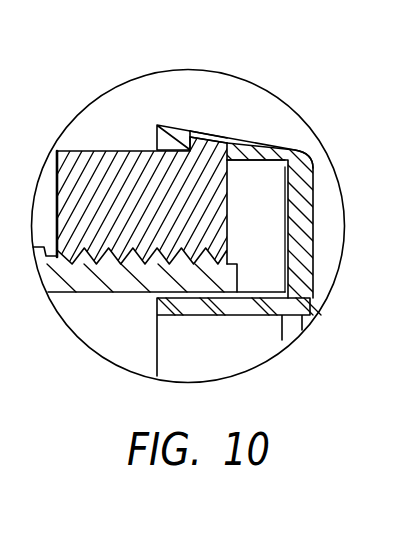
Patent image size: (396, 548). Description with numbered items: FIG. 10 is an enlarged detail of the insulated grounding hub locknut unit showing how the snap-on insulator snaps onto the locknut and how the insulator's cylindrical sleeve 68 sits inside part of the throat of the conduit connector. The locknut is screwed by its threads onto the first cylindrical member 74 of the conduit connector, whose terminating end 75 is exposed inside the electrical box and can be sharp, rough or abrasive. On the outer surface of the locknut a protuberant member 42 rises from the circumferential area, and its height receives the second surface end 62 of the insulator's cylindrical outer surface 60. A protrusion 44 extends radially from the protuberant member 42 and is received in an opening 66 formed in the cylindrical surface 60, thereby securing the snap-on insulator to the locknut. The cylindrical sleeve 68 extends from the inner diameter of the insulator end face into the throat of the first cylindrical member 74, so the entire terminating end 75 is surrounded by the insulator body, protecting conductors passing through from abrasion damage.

The protuberant member 42 is at (103, 151).
The protrusion 44 is at (229, 139).
The cylindrical outer surface 60 is at (293, 142).
The second surface end 62 is at (178, 125).
The opening 66 is at (231, 140).
The cylindrical sleeve 68 is at (250, 316).
The first cylindrical member 74 is at (93, 285).
The terminating end 75 is at (238, 283).